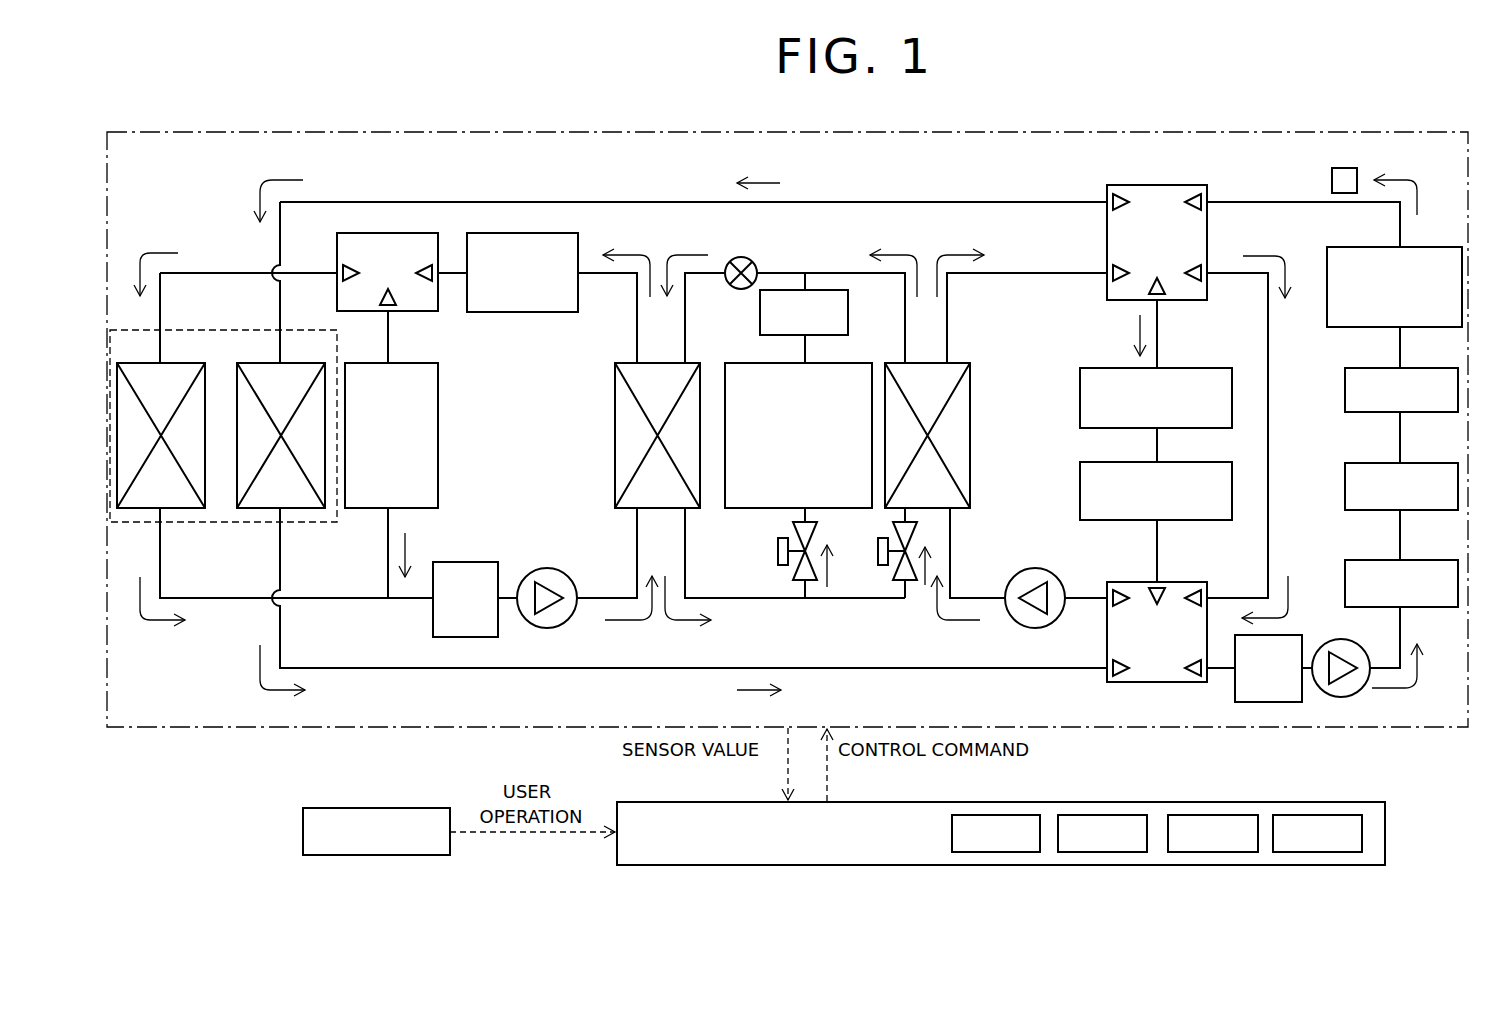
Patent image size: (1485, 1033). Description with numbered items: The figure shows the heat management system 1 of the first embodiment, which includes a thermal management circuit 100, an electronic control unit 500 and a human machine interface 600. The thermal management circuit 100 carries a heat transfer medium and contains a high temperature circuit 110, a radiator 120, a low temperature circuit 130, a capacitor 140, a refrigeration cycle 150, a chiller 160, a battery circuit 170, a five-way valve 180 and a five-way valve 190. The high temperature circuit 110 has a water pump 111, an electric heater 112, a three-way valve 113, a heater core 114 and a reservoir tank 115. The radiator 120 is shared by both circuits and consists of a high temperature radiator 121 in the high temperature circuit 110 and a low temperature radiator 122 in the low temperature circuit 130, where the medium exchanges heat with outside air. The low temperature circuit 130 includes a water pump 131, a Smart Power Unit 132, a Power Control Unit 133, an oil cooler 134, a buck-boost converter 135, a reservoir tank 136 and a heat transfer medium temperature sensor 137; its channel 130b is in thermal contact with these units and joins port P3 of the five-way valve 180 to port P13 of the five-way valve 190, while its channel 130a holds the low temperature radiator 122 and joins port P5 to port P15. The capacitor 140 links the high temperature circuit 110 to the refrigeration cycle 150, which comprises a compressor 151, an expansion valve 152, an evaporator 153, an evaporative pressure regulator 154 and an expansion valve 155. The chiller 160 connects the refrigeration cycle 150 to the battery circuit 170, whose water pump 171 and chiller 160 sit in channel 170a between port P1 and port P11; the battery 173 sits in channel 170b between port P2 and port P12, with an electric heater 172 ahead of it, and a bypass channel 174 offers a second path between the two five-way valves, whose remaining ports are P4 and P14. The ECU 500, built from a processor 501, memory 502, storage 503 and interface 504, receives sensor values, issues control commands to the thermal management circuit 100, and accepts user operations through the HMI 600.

The heat management system 1 is at (122, 119).
The thermal management circuit 100 is at (1350, 131).
The high temperature circuit 110 is at (305, 262).
The water pump 111 is at (563, 572).
The electric heater 112 is at (545, 233).
The three-way valve 113 is at (408, 233).
The heater core 114 is at (407, 363).
The reservoir tank 115 is at (475, 562).
The radiator 120 is at (212, 330).
The high temperature radiator 121 is at (172, 510).
The low temperature radiator 122 is at (292, 510).
The low temperature circuit 130 is at (1305, 189).
The channel 130a is at (378, 202).
The channel 130b is at (1278, 204).
The water pump 131 is at (1345, 641).
The Smart Power Unit 132 is at (1406, 560).
The Power Control Unit 133 is at (1408, 463).
The oil cooler 134 is at (1408, 368).
The buck-boost converter 135 is at (1410, 247).
The reservoir tank 136 is at (1288, 635).
The heat transfer medium temperature sensor 137 is at (1348, 168).
The capacitor 140 is at (690, 363).
The refrigeration cycle 150 is at (781, 260).
The compressor 151 is at (742, 256).
The expansion valve 152 is at (793, 524).
The evaporator 153 is at (825, 363).
The Evaporative Pressure Regulator 154 is at (810, 288).
The expansion valve 155 is at (895, 525).
The chiller 160 is at (958, 363).
The battery circuit 170 is at (1018, 263).
The channel 170a is at (1030, 280).
The channel 170b is at (1160, 536).
The water pump 171 is at (1033, 570).
The electric heater 172 is at (1192, 368).
The battery 173 is at (1186, 462).
The bypass channel 174 is at (1270, 343).
The five-way valve 180 is at (1158, 243).
The five-way valve 190 is at (1163, 629).
The port P1 is at (1105, 268).
The port P2 is at (1160, 303).
The port P3 is at (1210, 201).
The port P4 is at (1210, 268).
The port P5 is at (1104, 190).
The port P11 is at (1108, 590).
The port P12 is at (1150, 582).
The port P13 is at (1197, 682).
The port P14 is at (1210, 597).
The port P15 is at (1119, 682).
The electronic control unit 500 is at (867, 802).
The processor 501 is at (998, 815).
The memory 502 is at (1104, 815).
The storage 503 is at (1213, 815).
The interface 504 is at (1318, 815).
The human machine interface 600 is at (403, 808).